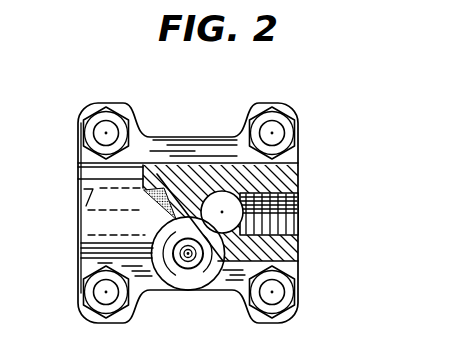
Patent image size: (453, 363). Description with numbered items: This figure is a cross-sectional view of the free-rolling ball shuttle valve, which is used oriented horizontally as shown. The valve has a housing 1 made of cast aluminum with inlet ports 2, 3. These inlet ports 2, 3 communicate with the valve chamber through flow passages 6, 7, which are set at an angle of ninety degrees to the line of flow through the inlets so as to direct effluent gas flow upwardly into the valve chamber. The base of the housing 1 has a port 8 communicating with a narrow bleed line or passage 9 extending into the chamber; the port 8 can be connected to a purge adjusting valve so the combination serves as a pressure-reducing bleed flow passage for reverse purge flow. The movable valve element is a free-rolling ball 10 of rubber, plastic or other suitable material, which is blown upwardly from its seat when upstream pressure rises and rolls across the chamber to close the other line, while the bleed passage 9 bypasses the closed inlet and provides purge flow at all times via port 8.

The housing 1 is at (92, 181).
The inlet port 2 is at (75, 219).
The inlet port 3 is at (299, 207).
The flow passage 6 is at (157, 206).
The flow passage 7 is at (214, 196).
The port 8 is at (187, 257).
The bleed line or passage 9 is at (189, 257).
The free-rolling ball 10 is at (155, 207).